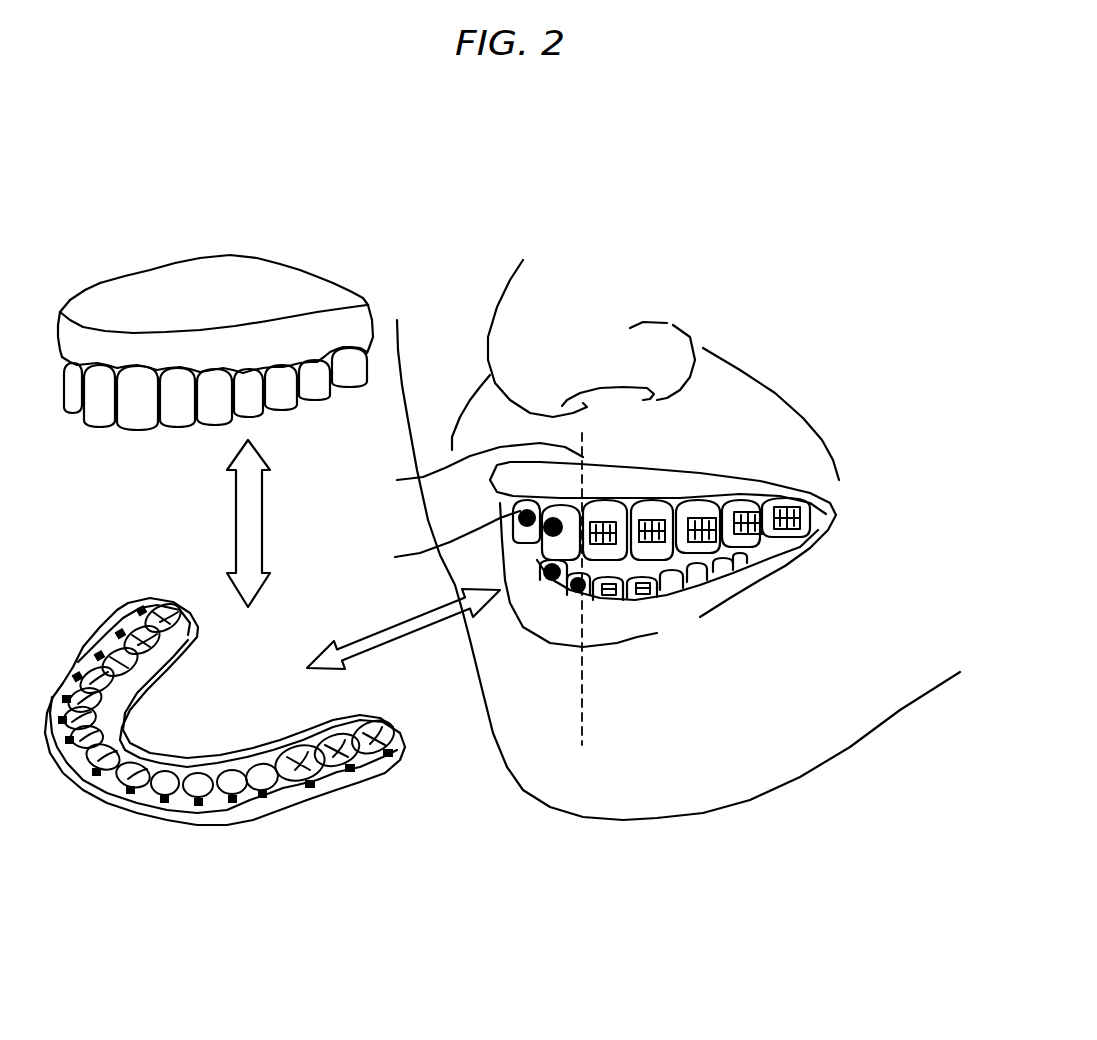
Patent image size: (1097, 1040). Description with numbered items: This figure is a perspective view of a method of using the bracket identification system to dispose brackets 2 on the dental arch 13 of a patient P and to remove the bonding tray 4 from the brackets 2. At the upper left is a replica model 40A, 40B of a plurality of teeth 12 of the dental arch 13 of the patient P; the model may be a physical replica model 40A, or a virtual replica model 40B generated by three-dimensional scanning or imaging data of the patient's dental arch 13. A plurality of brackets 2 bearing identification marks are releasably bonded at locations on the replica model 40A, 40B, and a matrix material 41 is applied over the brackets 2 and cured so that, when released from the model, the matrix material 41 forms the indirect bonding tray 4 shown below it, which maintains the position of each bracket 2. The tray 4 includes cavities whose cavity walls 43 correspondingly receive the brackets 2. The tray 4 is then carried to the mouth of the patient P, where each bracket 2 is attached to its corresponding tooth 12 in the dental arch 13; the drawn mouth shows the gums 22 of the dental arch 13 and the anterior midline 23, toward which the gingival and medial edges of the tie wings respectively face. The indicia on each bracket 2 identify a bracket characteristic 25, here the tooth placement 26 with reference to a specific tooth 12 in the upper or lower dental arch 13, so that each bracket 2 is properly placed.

The replica model 40A is at (215, 307).
The virtual replica model 40B is at (170, 305).
The bonding tray 4 is at (422, 649).
The matrix material 41 is at (377, 777).
The cavity walls 43 is at (138, 652).
The bracket 2 is at (275, 790).
The bracket characteristic 25 is at (684, 475).
The tooth placement 26 is at (700, 517).
The tooth 12 is at (770, 530).
The dental arch 13 is at (755, 483).
The gums 22 is at (445, 540).
The anterior midline 23 is at (397, 480).
The patient P is at (786, 304).